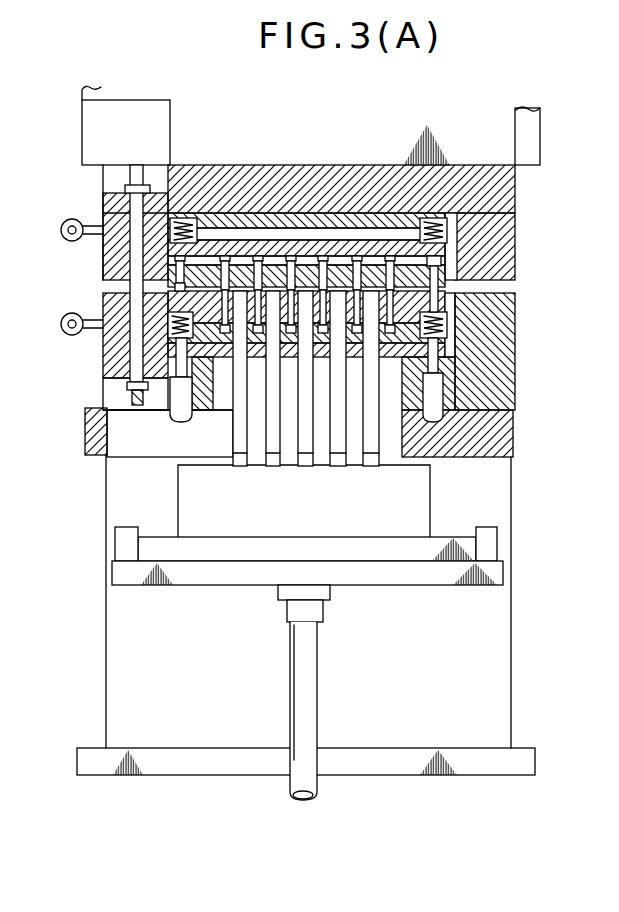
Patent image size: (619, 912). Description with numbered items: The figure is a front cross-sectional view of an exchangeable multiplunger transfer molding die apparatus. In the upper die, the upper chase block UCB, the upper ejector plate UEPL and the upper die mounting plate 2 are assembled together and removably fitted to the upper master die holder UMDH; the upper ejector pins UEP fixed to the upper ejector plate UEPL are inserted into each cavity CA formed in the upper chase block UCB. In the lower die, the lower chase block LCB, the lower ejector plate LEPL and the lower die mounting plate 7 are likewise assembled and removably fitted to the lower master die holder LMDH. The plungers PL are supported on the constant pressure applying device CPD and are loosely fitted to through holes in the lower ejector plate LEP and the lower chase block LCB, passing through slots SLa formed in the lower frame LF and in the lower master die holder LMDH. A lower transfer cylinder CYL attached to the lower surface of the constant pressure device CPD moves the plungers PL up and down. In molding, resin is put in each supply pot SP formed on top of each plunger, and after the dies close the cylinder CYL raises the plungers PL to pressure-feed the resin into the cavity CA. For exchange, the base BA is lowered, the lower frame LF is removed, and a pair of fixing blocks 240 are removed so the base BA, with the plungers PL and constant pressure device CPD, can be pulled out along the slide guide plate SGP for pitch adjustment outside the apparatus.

The supply pot SP is at (244, 257).
The cavity CA is at (304, 290).
The upper master die holder UMDH is at (334, 178).
The upper die mounting plate 2 is at (398, 218).
The upper ejector plate UEPL is at (448, 225).
The upper ejector pins UEP is at (454, 262).
The upper chase block UCB is at (436, 283).
The lower chase block LCB is at (440, 293).
The lower ejector plate LEP is at (454, 314).
The lower ejector plate LEPL is at (454, 344).
The lower master die holder LMDH is at (494, 368).
The plungers PL is at (470, 440).
The lower die mounting plate 7 is at (388, 358).
The lower frame LF is at (88, 433).
The slot SLa is at (117, 447).
The fixing blocks 240 is at (120, 537).
The constant pressure applying device CPD is at (420, 482).
The base BA is at (462, 542).
The slide guide plate SGP is at (497, 571).
The lower transfer cylinder CYL is at (308, 667).